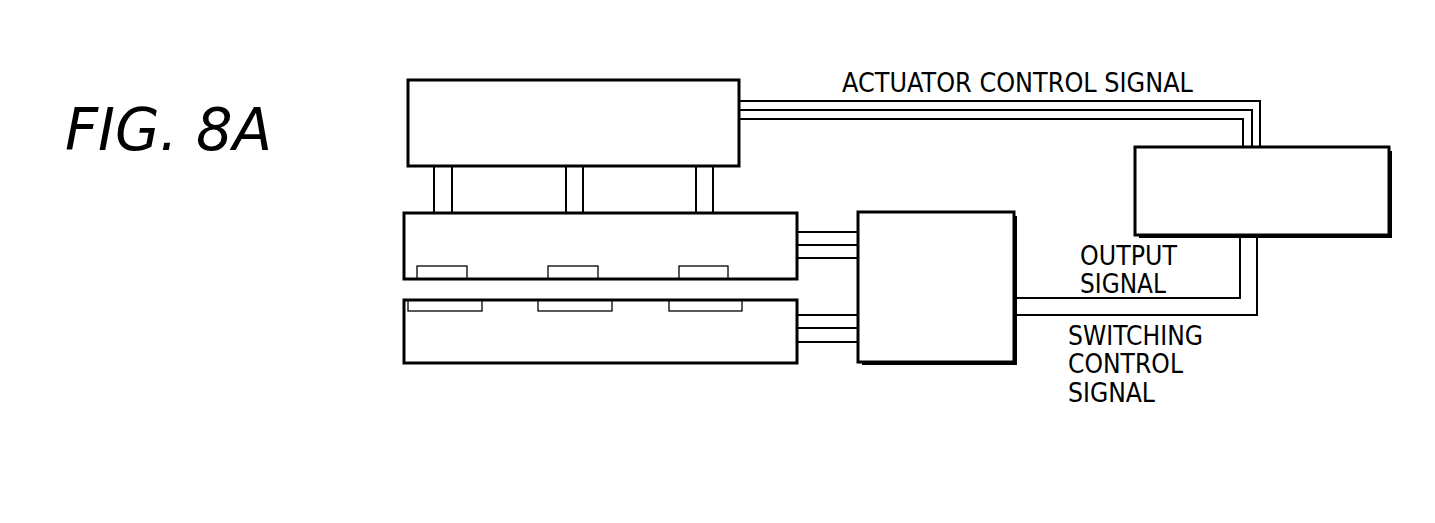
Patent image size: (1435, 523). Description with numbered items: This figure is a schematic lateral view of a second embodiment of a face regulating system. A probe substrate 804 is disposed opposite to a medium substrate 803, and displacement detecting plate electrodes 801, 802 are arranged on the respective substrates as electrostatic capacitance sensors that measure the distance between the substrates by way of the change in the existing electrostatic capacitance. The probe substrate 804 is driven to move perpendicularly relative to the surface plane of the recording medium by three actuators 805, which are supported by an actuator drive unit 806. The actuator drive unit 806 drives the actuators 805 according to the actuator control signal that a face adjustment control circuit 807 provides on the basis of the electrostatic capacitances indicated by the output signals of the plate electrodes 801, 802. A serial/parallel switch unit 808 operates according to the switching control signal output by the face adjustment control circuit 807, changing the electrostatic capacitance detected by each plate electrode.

The displacement detecting plate electrode 801 is at (552, 270).
The displacement detecting plate electrode 802 is at (552, 312).
The medium substrate 803 is at (410, 349).
The probe substrate 804 is at (410, 230).
The actuator 805 is at (567, 193).
The actuator drive unit 806 is at (675, 80).
The face adjustment control circuit 807 is at (1330, 147).
The serial/parallel switch unit 808 is at (976, 364).